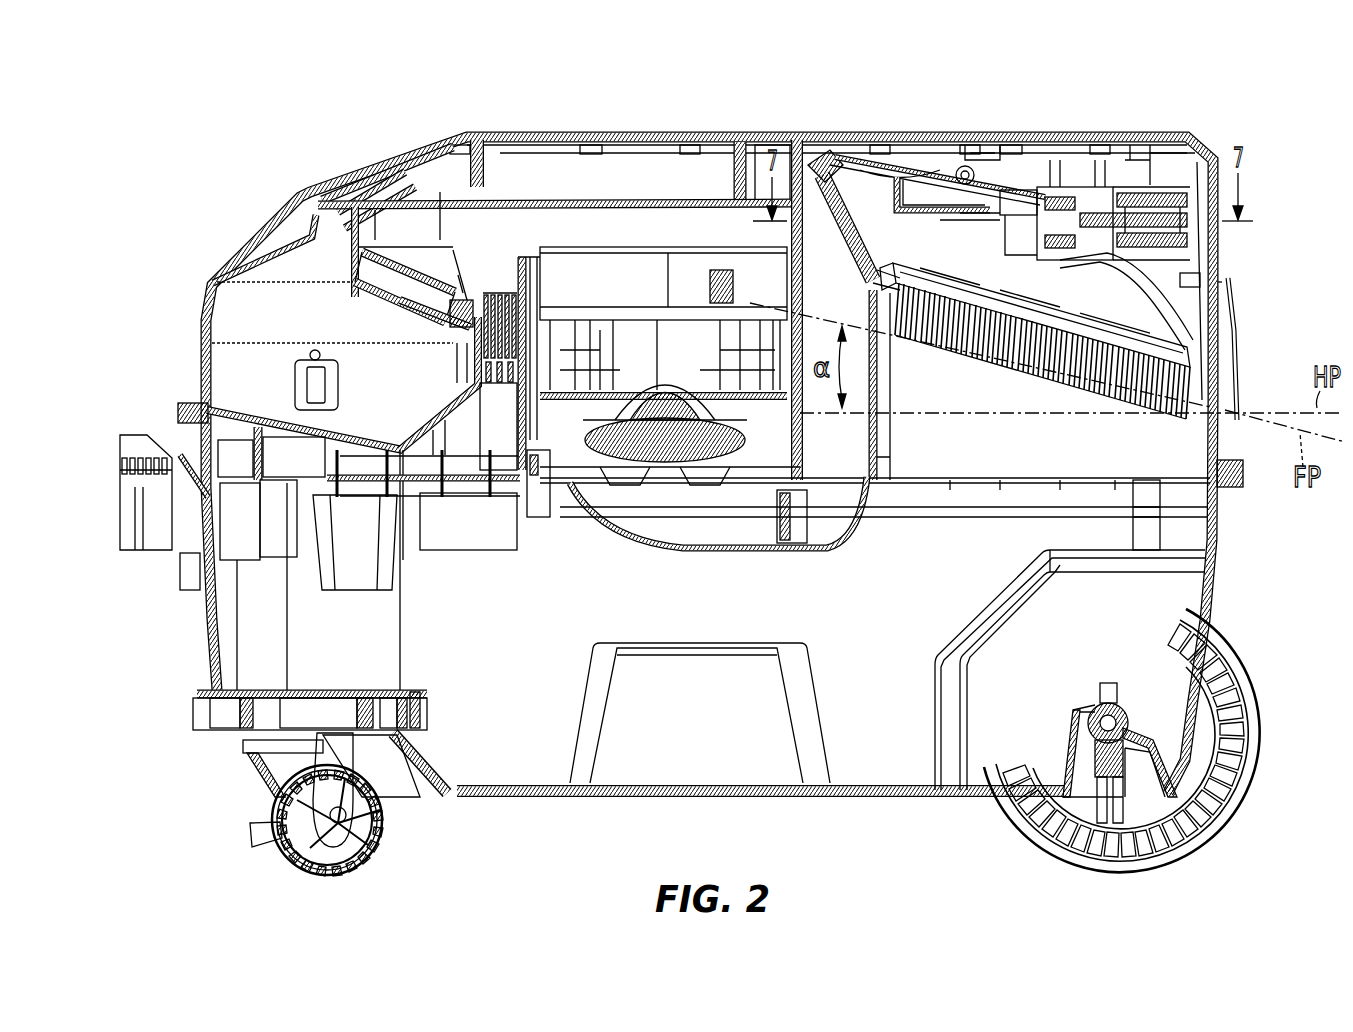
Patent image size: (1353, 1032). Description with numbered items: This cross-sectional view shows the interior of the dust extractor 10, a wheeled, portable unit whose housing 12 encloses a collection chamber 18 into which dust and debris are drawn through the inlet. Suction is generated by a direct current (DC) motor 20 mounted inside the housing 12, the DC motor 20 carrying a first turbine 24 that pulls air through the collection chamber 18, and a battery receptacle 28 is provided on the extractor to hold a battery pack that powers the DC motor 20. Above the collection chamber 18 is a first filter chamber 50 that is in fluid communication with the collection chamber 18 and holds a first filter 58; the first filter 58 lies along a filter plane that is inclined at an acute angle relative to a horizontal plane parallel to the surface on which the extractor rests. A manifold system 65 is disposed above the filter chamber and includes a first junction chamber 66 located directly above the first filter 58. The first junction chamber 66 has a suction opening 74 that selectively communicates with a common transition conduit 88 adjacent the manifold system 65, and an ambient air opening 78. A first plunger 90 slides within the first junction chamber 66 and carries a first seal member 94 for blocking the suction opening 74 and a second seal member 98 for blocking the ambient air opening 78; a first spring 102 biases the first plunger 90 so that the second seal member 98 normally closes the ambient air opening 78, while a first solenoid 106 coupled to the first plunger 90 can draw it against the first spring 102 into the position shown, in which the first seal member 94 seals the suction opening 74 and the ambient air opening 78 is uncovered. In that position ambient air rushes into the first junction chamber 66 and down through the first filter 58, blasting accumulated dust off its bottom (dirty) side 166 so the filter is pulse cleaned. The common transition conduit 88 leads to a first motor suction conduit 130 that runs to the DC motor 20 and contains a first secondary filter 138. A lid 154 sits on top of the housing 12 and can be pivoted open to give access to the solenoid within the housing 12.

The dust extractor 10 is at (978, 91).
The housing 12 is at (1217, 533).
The collection chamber 18 is at (873, 747).
The direct current (DC) motor 20 is at (667, 440).
The first turbine 24 is at (733, 483).
The battery receptacle 28 is at (245, 320).
The first filter chamber 50 is at (1013, 437).
The first filter 58 is at (1183, 387).
The manifold system 65 is at (1195, 255).
The first junction chamber 66 is at (933, 187).
The suction opening 74 is at (917, 177).
The ambient air opening 78 is at (1012, 197).
The common transition conduit 88 is at (780, 243).
The first plunger 90 is at (975, 128).
The first seal member 94 is at (837, 180).
The second seal member 98 is at (1058, 190).
The first spring 102 is at (1083, 200).
The first solenoid 106 is at (1170, 200).
The first motor suction conduit 130 is at (747, 523).
The first secondary filter 138 is at (780, 523).
The lid 154 is at (1170, 150).
The bottom (dirty) side 166 is at (977, 357).